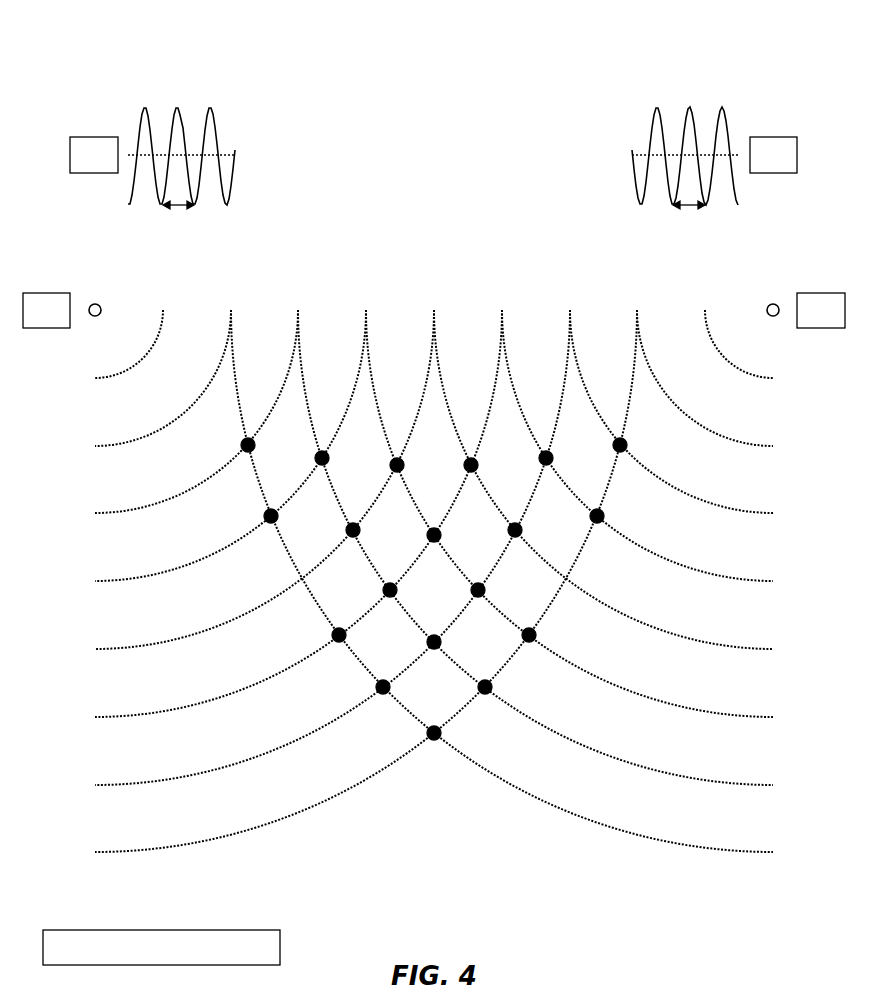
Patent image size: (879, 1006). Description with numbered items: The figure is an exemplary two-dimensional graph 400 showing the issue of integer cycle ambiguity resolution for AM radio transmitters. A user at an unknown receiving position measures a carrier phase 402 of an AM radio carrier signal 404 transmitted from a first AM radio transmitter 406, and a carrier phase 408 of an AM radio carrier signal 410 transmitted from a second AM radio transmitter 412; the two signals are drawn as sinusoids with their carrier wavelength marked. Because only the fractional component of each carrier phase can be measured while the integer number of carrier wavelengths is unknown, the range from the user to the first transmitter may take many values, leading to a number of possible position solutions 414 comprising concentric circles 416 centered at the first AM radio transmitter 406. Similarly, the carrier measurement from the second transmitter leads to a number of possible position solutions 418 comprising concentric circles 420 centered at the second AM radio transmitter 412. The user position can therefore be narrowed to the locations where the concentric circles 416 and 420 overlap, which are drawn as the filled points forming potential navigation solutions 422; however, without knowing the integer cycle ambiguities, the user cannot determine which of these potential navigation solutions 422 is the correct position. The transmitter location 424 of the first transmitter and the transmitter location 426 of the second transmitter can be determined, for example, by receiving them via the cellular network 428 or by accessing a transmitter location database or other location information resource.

The two-dimensional graph 400 is at (412, 44).
The carrier phase 402 is at (153, 155).
The AM radio carrier signal 404 is at (178, 107).
The first AM radio transmitter 406 is at (91, 304).
The carrier phase 408 is at (714, 155).
The AM radio carrier signal 410 is at (690, 107).
The second AM radio transmitter 412 is at (777, 304).
The possible position solutions 414 is at (104, 722).
The concentric circles 416 is at (323, 726).
The possible position solutions 418 is at (765, 722).
The concentric circles 420 is at (668, 703).
The potential navigation solutions 422 is at (436, 653).
The transmitter location 424 is at (46, 310).
The transmitter location 426 is at (821, 310).
The cellular network 428 is at (161, 947).